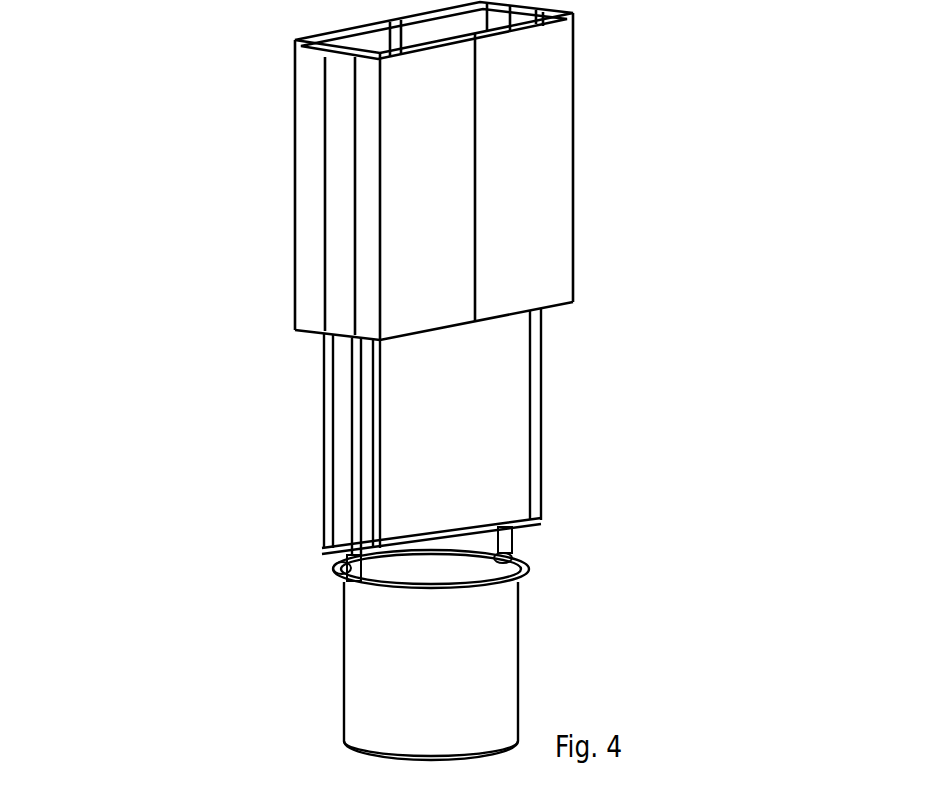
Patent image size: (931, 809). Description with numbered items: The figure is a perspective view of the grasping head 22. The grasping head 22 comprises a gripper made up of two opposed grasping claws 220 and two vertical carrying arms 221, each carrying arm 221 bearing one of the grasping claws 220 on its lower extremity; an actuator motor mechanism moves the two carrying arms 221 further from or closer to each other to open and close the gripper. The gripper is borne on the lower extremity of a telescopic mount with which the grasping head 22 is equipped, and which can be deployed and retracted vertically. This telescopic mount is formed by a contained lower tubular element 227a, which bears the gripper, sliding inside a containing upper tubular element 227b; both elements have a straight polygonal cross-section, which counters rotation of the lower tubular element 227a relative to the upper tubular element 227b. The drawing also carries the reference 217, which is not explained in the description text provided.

The holder assembly 217 is at (268, 266).
The grasping head 22 is at (607, 277).
The containing upper tubular element 227b is at (545, 185).
The contained lower tubular element 227a is at (503, 427).
The vertical carrying arm 221 is at (340, 565).
The grasping claw 220 is at (377, 590).